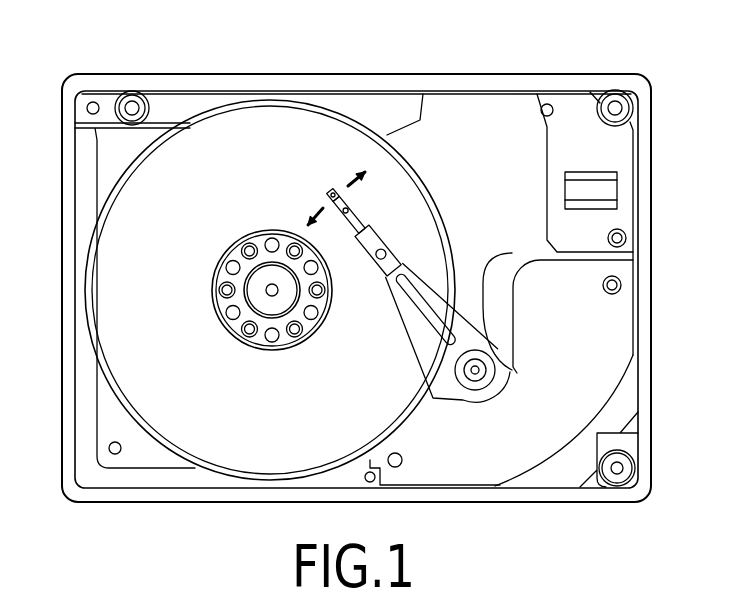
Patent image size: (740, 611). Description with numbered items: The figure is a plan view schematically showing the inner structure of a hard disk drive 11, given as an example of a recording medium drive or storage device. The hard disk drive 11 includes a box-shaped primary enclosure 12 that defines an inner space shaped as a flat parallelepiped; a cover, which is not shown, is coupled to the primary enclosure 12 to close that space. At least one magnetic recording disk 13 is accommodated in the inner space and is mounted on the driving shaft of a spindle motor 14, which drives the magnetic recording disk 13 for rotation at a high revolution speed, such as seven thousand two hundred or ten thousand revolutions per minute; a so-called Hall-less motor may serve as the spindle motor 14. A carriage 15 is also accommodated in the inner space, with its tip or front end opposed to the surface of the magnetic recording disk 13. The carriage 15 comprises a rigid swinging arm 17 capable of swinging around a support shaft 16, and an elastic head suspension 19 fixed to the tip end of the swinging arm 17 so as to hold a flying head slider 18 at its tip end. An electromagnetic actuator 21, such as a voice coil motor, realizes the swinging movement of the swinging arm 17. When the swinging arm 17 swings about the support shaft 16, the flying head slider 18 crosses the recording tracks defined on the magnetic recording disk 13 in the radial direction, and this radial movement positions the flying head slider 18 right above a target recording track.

The hard disk drive 11 is at (392, 57).
The primary enclosure 12 is at (271, 500).
The magnetic recording disk 13 is at (436, 201).
The spindle motor 14 is at (250, 298).
The carriage 15 is at (363, 296).
The support shaft 16 is at (478, 375).
The swinging arm 17 is at (406, 324).
The flying head slider 18 is at (327, 196).
The elastic head suspension 19 is at (349, 211).
The electromagnetic actuator 21 is at (568, 489).